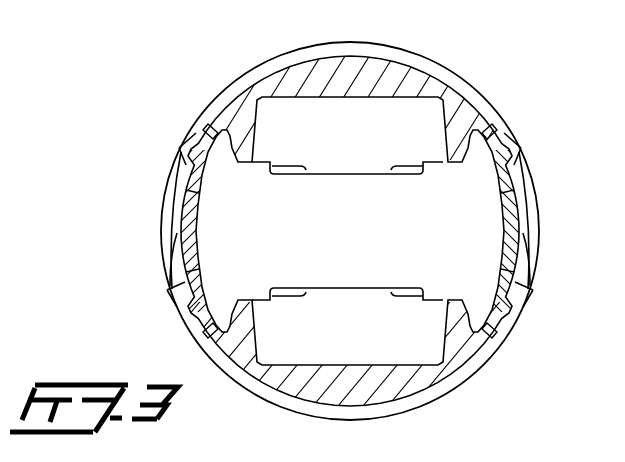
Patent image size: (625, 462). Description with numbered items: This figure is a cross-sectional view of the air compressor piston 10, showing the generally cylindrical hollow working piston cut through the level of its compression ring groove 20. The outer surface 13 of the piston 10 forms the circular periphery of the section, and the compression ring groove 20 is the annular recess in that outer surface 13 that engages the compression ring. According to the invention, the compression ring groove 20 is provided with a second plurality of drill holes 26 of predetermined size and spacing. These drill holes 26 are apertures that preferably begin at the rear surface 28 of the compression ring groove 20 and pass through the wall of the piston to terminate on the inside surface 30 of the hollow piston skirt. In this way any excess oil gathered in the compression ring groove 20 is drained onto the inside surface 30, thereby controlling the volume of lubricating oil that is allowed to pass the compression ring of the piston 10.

The air compressor piston 10 is at (494, 100).
The outer surface 13 is at (443, 66).
The compression ring groove 20 is at (478, 358).
The drill holes 26 is at (179, 148).
The rear surface 28 is at (172, 206).
The inside surface 30 is at (192, 210).